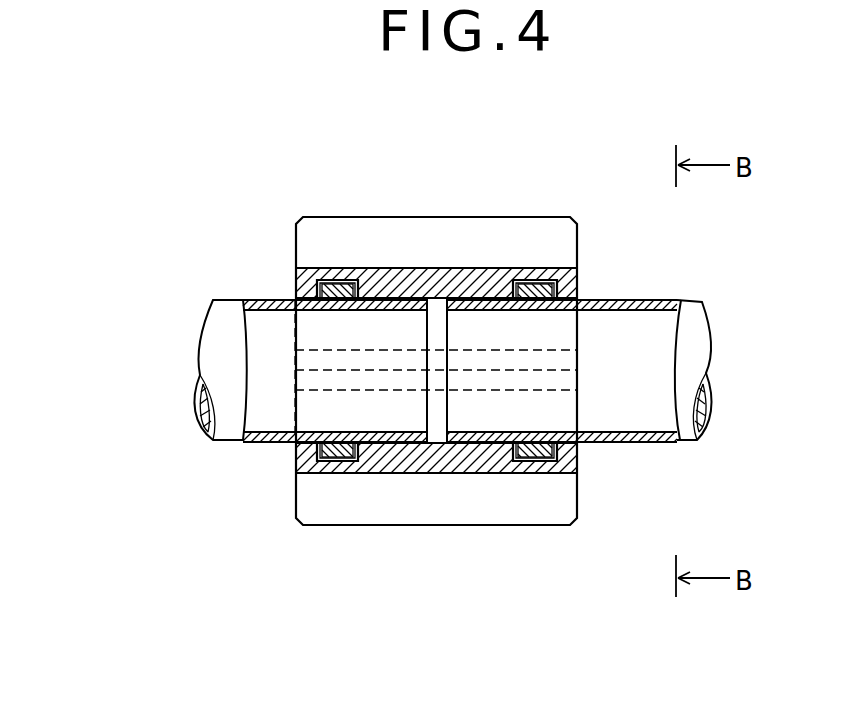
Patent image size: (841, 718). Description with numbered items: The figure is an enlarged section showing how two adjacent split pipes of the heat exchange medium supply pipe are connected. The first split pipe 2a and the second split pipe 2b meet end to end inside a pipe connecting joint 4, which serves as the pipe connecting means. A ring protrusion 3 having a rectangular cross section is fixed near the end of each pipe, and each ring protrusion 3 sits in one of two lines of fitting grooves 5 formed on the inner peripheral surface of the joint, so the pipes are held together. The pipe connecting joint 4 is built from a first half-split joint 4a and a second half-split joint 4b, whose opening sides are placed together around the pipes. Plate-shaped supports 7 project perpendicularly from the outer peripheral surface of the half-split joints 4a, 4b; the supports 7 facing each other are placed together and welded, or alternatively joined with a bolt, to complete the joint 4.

The first split pipe 2a is at (257, 298).
The second split pipe 2b is at (655, 300).
The ring protrusion 3 is at (333, 281).
The pipe connecting joint 4 is at (406, 373).
The first half-split joint 4a is at (580, 280).
The second half-split joint 4b is at (480, 475).
The fitting groove 5 is at (342, 286).
The support 7 is at (436, 217).